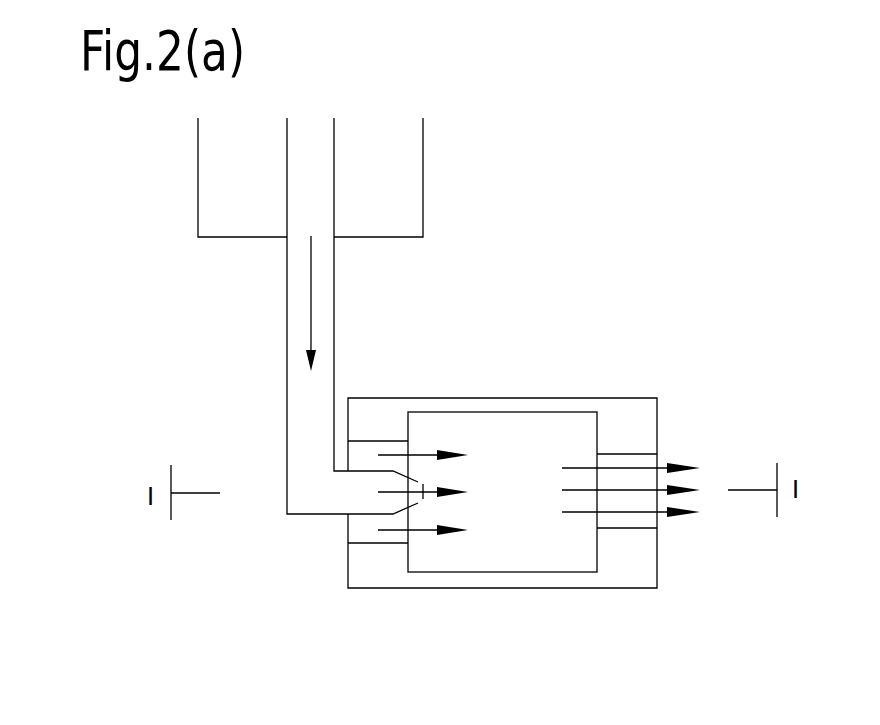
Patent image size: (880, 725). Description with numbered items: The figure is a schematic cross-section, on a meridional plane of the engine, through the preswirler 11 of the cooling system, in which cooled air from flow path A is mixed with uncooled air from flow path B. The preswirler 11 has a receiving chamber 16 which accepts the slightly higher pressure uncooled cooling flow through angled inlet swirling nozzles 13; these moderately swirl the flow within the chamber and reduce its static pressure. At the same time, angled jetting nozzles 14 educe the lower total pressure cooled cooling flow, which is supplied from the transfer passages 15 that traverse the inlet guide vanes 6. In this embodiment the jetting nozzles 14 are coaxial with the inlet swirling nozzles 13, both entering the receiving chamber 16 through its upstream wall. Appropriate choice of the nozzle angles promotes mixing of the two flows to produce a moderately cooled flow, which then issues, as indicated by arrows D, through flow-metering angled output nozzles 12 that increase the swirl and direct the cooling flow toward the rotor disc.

The inlet guide vanes 6 is at (247, 218).
The transfer passages 15 is at (323, 203).
The preswirler 11 is at (500, 603).
The receiving chamber 16 is at (530, 412).
The jetting nozzles 14 is at (405, 499).
The inlet swirling nozzles 13 is at (392, 543).
The output nozzles 12 is at (657, 528).